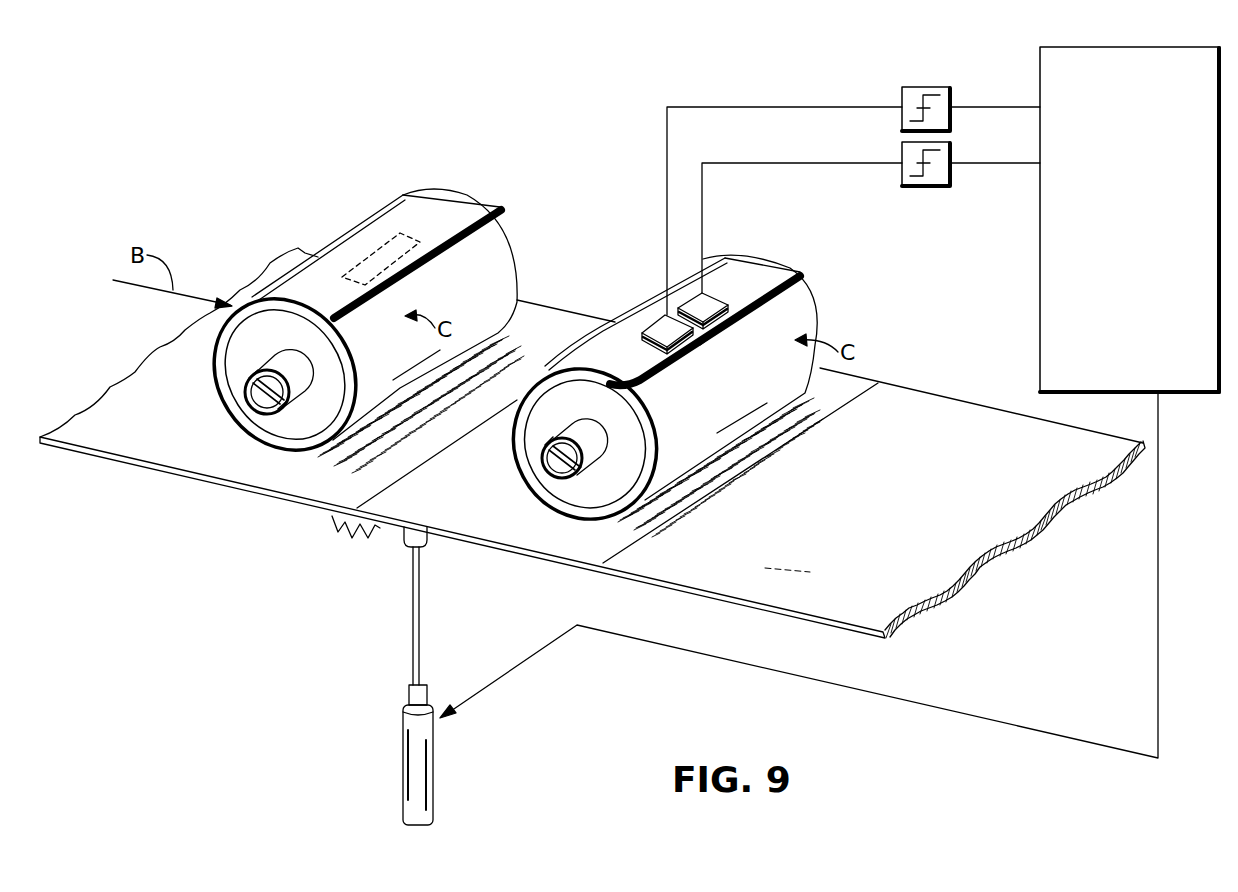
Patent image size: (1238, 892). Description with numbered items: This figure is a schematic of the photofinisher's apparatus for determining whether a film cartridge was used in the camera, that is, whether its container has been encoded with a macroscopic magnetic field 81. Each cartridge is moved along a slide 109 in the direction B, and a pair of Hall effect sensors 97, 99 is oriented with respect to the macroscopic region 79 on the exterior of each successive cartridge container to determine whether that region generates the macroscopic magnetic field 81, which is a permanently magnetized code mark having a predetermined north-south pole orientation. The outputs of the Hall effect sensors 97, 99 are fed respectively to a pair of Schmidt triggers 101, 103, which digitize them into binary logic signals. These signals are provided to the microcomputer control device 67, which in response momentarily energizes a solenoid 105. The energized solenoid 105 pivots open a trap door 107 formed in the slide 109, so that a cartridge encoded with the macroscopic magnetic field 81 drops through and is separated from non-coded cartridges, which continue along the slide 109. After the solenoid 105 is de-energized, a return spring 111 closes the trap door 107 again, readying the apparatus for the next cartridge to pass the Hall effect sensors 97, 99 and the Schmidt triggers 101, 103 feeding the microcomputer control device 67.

The microcomputer control device 67 is at (1040, 300).
The macroscopic region 79 is at (372, 255).
The macroscopic magnetic field 81 is at (717, 330).
The Hall effect sensor 97 is at (697, 300).
The Hall effect sensor 99 is at (657, 327).
The Schmidt trigger 101 is at (932, 87).
The Schmidt trigger 103 is at (950, 178).
The solenoid 105 is at (417, 758).
The trap door 107 is at (480, 528).
The slide 109 is at (173, 456).
The return spring 111 is at (358, 535).